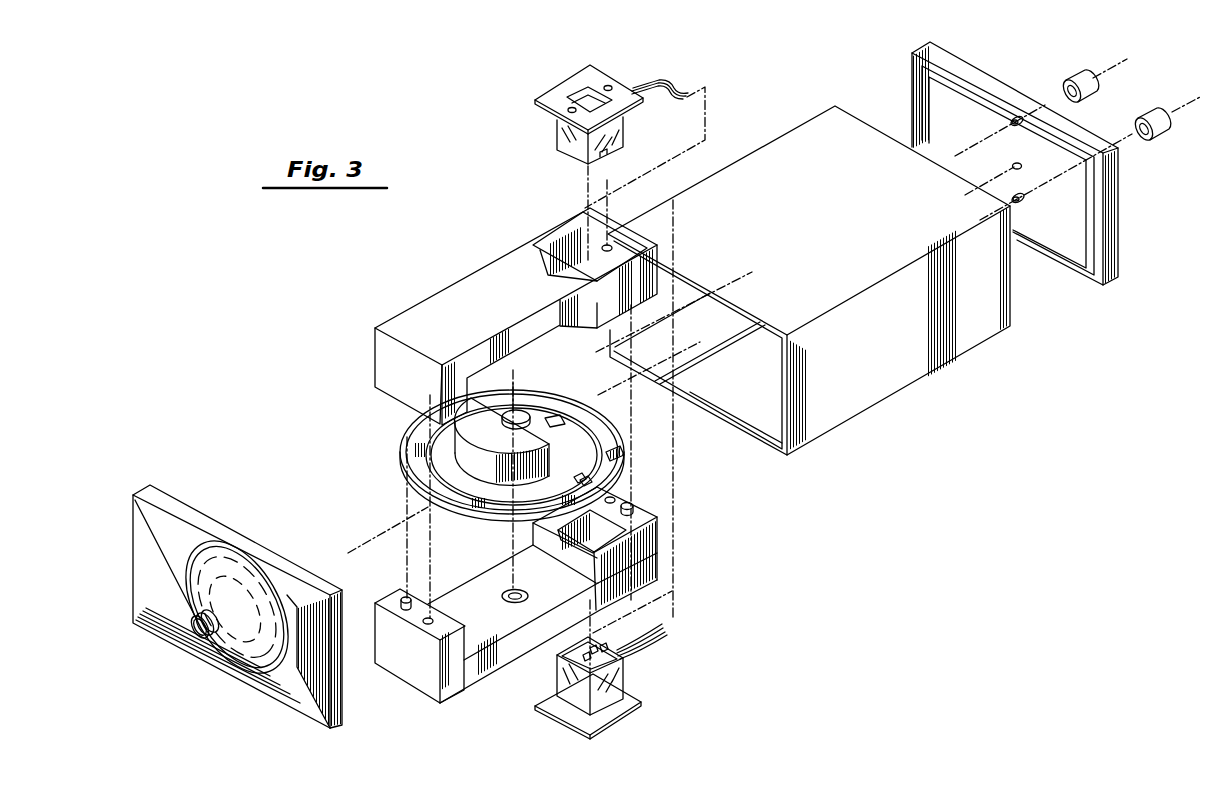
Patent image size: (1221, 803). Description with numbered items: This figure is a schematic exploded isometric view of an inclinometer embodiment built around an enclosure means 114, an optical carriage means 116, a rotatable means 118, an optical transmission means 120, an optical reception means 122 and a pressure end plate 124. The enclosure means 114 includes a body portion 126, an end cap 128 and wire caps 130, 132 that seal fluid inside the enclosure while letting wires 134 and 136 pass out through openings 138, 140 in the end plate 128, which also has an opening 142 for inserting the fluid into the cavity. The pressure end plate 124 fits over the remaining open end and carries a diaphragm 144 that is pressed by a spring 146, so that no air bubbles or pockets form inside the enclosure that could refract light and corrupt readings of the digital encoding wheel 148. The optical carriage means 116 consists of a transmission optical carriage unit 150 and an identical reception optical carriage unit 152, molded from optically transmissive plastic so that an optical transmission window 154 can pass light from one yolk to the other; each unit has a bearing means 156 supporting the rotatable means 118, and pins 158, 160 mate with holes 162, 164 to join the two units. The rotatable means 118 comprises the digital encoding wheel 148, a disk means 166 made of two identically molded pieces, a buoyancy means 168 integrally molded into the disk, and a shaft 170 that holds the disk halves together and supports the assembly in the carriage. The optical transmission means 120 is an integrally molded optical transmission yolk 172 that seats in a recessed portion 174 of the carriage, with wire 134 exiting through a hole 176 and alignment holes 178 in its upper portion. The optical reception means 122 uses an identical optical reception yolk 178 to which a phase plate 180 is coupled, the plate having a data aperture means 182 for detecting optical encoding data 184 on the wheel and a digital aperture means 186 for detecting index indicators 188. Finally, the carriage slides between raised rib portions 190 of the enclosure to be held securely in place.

The enclosure means 114 is at (816, 288).
The optical carriage means 116 is at (531, 611).
The rotatable means 118 is at (488, 453).
The optical transmission means 120 is at (586, 396).
The optical reception means 122 is at (605, 685).
The pressure end plate 124 is at (237, 613).
The body portion 126 is at (977, 335).
The end cap 128 is at (1049, 163).
The wire cap 130 is at (1098, 95).
The wire cap 132 is at (1163, 135).
The wire 134 is at (661, 86).
The wire 136 is at (657, 650).
The opening 138 is at (1022, 127).
The opening 140 is at (1024, 202).
The opening 142 is at (1022, 168).
The diaphragm 144 is at (225, 568).
The spring 146 is at (220, 630).
The digital encoding wheel means 148 is at (606, 437).
The transmission optical carriage unit 150 is at (506, 306).
The reception optical carriage unit 152 is at (392, 660).
The optical transmission window 154 is at (612, 530).
The bearing means 156 is at (516, 606).
The pin 158 is at (401, 599).
The pin 160 is at (636, 508).
The hole 162 is at (428, 628).
The hole 164 is at (614, 498).
The disk means 166 is at (550, 417).
The buoyancy means 168 is at (483, 456).
The shaft 170 is at (515, 405).
The optical transmission yolk 172 is at (550, 92).
The recessed portion 174 is at (558, 243).
The hole 176 is at (608, 245).
The holes / optical reception yolk 178 is at (572, 108).
The phase plate 180 is at (560, 655).
The data aperture means 182 is at (593, 648).
The optical encoding data 184 is at (620, 452).
The digital aperture means 186 is at (577, 667).
The index indicators 188 is at (586, 474).
The raised rib portions 190 is at (668, 272).